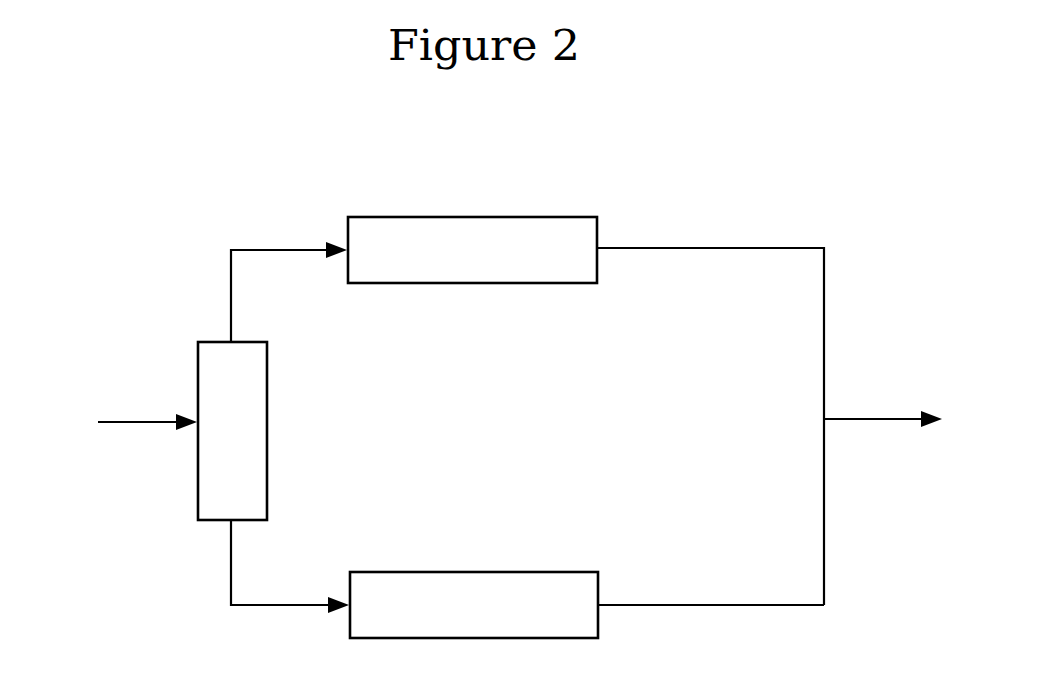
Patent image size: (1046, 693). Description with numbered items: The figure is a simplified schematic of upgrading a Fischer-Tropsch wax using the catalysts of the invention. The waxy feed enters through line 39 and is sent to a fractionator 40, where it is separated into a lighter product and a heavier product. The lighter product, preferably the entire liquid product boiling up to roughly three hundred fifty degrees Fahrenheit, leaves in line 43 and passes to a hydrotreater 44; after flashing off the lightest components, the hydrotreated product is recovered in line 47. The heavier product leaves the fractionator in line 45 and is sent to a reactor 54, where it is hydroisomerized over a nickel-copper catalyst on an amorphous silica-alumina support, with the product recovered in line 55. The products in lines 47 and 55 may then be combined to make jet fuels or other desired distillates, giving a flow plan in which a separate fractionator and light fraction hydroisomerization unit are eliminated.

The line 39 is at (132, 420).
The fractionator 40 is at (267, 380).
The line 43 is at (270, 249).
The hydrotreater 44 is at (415, 215).
The line 45 is at (267, 603).
The line 47 is at (625, 247).
The reactor 54 is at (402, 570).
The line 55 is at (635, 603).